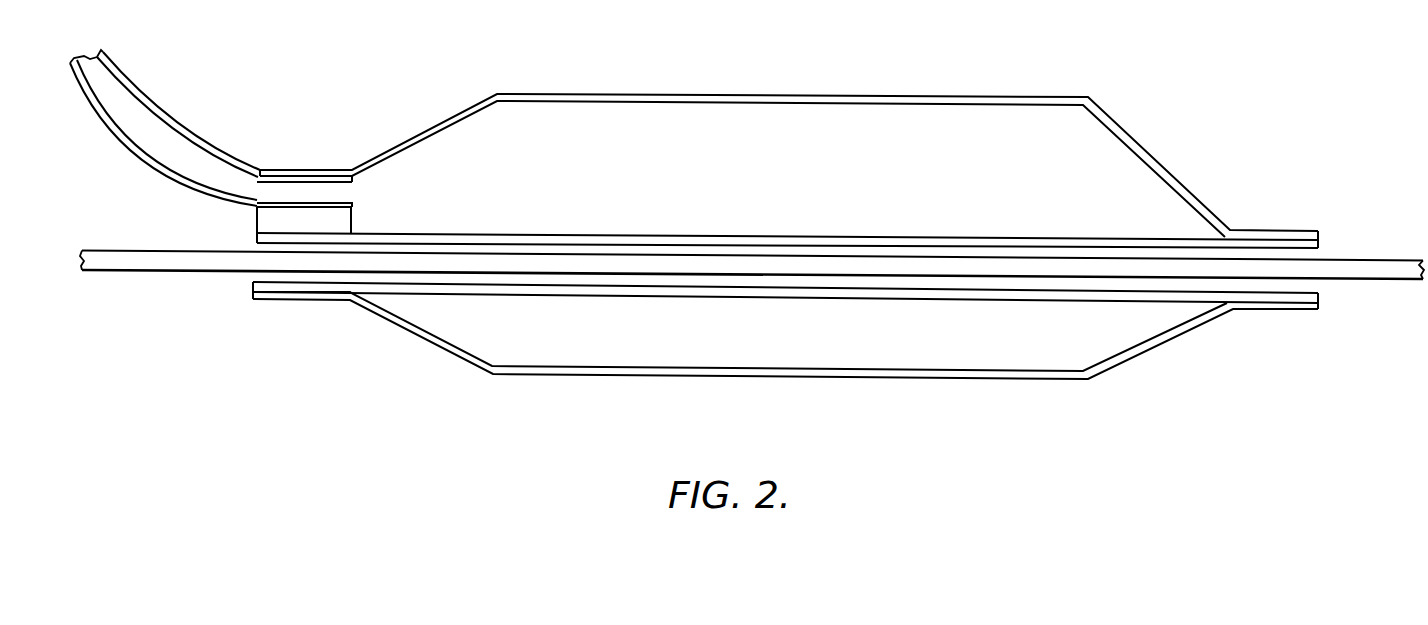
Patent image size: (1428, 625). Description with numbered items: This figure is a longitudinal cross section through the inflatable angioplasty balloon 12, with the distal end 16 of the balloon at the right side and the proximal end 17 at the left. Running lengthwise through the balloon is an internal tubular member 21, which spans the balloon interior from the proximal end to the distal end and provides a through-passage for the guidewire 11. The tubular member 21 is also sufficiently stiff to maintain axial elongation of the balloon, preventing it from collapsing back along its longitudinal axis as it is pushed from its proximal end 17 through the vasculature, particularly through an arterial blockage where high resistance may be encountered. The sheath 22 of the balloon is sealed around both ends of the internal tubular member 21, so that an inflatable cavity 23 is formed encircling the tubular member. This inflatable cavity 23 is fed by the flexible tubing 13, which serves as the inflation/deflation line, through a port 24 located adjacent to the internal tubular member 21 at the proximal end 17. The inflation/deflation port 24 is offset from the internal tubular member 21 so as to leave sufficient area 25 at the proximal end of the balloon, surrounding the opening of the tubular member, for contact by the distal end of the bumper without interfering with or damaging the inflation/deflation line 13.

The guidewire 11 is at (157, 250).
The inflatable angioplasty balloon 12 is at (1205, 73).
The flexible tubing 13 is at (140, 105).
The distal end 16 is at (1317, 228).
The proximal end 17 is at (263, 145).
The internal tubular member 21 is at (796, 237).
The sheath 22 is at (832, 95).
The inflatable cavity 23 is at (682, 135).
The inflation/deflation port 24 is at (305, 193).
The area 25 is at (257, 223).